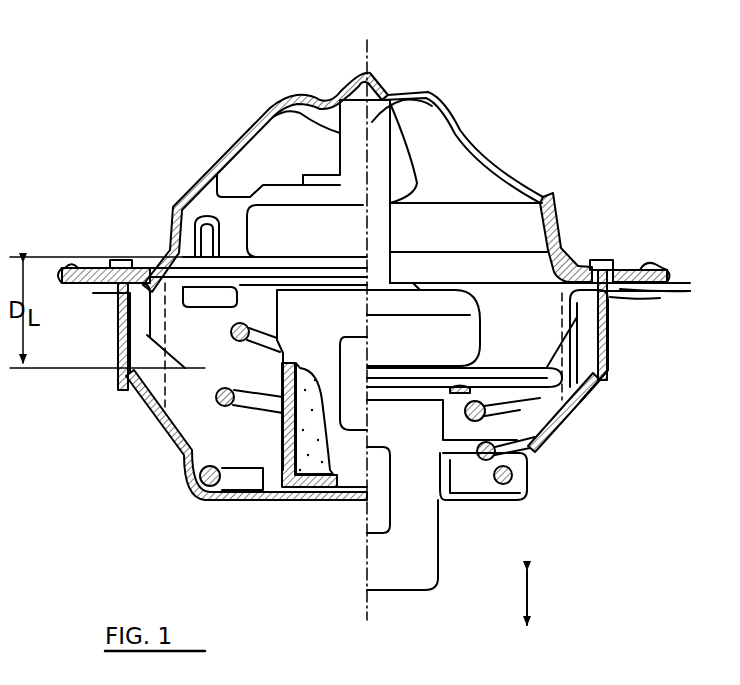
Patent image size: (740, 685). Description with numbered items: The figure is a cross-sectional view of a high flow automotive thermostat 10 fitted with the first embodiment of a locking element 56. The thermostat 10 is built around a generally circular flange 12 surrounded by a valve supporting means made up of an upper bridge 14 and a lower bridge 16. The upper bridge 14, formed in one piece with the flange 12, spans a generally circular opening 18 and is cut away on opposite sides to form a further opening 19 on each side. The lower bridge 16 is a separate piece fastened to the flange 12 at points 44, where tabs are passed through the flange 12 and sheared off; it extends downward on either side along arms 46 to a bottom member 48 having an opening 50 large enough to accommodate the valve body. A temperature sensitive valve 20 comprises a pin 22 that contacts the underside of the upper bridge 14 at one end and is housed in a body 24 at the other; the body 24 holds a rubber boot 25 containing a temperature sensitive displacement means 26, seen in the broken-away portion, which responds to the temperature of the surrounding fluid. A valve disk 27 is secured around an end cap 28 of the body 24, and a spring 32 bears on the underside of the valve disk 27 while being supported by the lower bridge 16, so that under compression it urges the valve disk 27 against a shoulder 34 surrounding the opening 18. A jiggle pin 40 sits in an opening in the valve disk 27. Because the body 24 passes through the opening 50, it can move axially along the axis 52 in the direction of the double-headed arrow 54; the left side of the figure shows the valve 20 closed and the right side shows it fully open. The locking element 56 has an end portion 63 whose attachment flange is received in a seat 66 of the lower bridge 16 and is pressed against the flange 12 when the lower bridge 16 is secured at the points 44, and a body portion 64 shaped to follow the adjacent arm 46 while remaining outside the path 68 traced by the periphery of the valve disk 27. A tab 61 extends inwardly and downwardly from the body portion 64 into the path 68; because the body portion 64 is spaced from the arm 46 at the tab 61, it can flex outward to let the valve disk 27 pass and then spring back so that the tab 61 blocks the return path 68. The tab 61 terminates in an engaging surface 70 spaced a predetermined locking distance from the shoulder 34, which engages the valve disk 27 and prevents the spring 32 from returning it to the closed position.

The thermostat 10 is at (396, 45).
The flange 12 is at (624, 268).
The upper bridge 14 is at (512, 172).
The lower bridge 16 is at (612, 345).
The opening 18 is at (520, 265).
The further opening 19 is at (275, 130).
The temperature sensitive valve 20 is at (405, 237).
The pin 22 is at (396, 99).
The body 24 is at (432, 555).
The rubber boot 25 is at (287, 498).
The temperature sensitive displacement means 26 is at (318, 470).
The valve disk 27 is at (545, 398).
The end cap 28 is at (455, 345).
The spring 32 is at (540, 455).
The shoulder 34 is at (560, 268).
The jiggle pin 40 is at (195, 290).
The points 44 is at (125, 270).
The arms 46 is at (612, 365).
The bottom member 48 is at (230, 502).
The opening 50 is at (447, 502).
The axis 52 is at (370, 609).
The double-headed arrow 54 is at (527, 598).
The locking element 56 is at (590, 321).
The tab 61 is at (168, 352).
The end portion 63 is at (650, 283).
The body portion 64 is at (562, 392).
The seat 66 is at (618, 297).
The path 68 is at (557, 290).
The engaging surface 70 is at (550, 372).